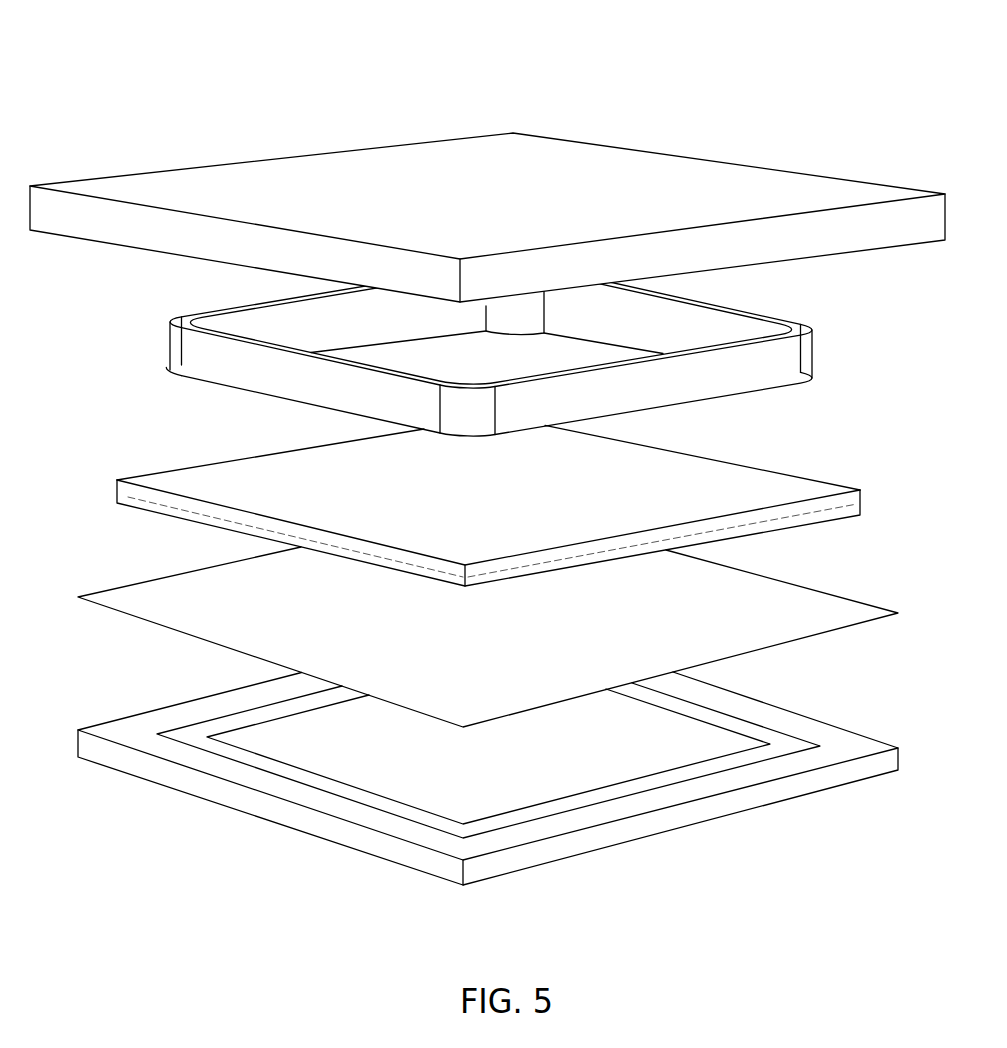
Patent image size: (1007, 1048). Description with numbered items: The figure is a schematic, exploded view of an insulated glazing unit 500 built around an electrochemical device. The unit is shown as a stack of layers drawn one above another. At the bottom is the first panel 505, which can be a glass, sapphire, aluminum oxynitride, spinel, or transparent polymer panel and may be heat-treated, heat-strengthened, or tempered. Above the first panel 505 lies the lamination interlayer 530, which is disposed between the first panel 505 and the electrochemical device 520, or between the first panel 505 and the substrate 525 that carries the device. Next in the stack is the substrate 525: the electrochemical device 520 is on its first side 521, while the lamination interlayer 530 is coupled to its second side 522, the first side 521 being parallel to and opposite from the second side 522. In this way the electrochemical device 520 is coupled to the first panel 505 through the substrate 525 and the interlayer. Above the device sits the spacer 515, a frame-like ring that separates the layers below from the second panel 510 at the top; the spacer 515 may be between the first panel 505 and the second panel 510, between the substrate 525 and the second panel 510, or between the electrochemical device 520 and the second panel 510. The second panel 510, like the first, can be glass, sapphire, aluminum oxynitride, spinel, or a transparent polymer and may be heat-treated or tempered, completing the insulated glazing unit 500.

The insulated glazing unit 500 is at (218, 70).
The first panel 505 is at (790, 775).
The second panel 510 is at (837, 240).
The spacer 515 is at (793, 356).
The electrochemical device 520 is at (497, 500).
The first side 521 is at (782, 478).
The second side 522 is at (808, 545).
The substrate 525 is at (182, 522).
The lamination interlayer 530 is at (170, 615).